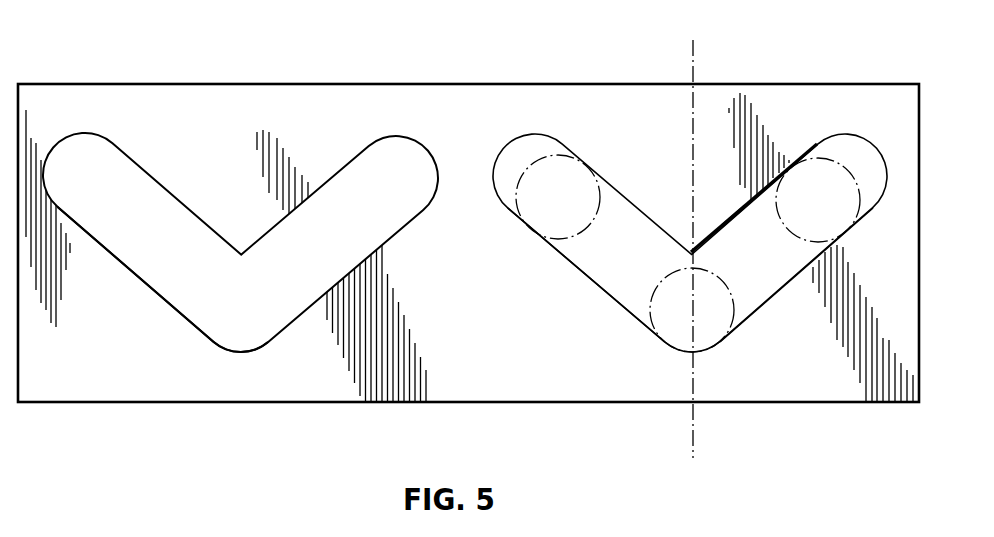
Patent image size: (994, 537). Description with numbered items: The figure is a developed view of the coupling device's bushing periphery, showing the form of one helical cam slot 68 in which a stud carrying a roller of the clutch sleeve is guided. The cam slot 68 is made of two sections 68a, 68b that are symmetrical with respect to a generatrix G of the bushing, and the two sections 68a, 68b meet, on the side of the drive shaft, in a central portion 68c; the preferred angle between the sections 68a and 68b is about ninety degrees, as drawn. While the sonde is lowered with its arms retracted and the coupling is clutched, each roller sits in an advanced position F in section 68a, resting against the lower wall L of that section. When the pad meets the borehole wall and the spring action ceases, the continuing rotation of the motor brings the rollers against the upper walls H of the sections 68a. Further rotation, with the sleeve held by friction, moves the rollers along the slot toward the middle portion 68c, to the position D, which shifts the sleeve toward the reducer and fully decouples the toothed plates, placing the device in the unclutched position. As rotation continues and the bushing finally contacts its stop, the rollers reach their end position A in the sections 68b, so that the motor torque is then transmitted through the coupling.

The helical cam slot 68 is at (372, 162).
The cam slot section 68a is at (812, 238).
The cam slot section 68b is at (588, 262).
The central portion 68c is at (248, 328).
The end position A is at (531, 215).
The position of wheels D is at (666, 328).
The advanced position F is at (811, 178).
The generatrix G is at (691, 236).
The upper wall H is at (733, 212).
The lower wall L is at (757, 298).